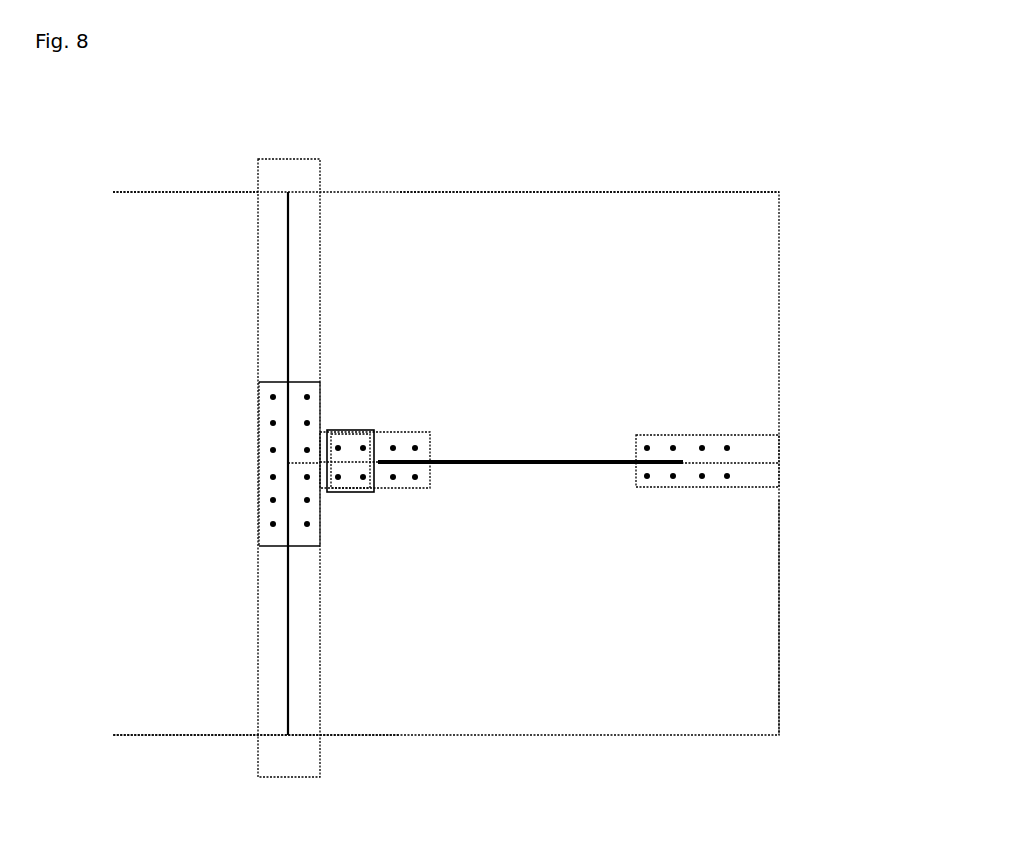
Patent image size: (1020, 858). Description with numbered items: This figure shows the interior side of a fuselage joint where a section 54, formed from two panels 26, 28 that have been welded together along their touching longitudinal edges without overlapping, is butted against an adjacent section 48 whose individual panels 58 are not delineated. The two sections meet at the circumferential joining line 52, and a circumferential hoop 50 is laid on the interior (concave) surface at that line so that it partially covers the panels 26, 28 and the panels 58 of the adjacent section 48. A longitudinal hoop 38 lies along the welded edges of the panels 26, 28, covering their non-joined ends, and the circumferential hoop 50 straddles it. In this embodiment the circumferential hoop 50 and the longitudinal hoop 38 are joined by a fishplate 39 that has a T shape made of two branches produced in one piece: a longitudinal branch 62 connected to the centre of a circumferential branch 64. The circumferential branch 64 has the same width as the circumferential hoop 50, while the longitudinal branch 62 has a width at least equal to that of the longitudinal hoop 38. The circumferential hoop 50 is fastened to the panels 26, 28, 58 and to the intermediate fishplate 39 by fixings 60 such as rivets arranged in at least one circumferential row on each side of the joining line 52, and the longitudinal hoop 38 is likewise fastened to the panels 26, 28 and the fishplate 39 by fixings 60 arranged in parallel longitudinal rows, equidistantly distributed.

The panel 26 is at (733, 275).
The panel 28 is at (728, 604).
The longitudinal hoop 38 is at (351, 448).
The fishplate 39 is at (348, 477).
The adjacent section 48 is at (170, 690).
The circumferential hoop 50 is at (280, 178).
The circumferential joining line 52 is at (291, 412).
The section 54 is at (566, 236).
The panels of the adjacent section 58 is at (135, 218).
The fixings 60 is at (273, 451).
The longitudinal branch 62 is at (341, 432).
The circumferential branch 64 is at (262, 543).